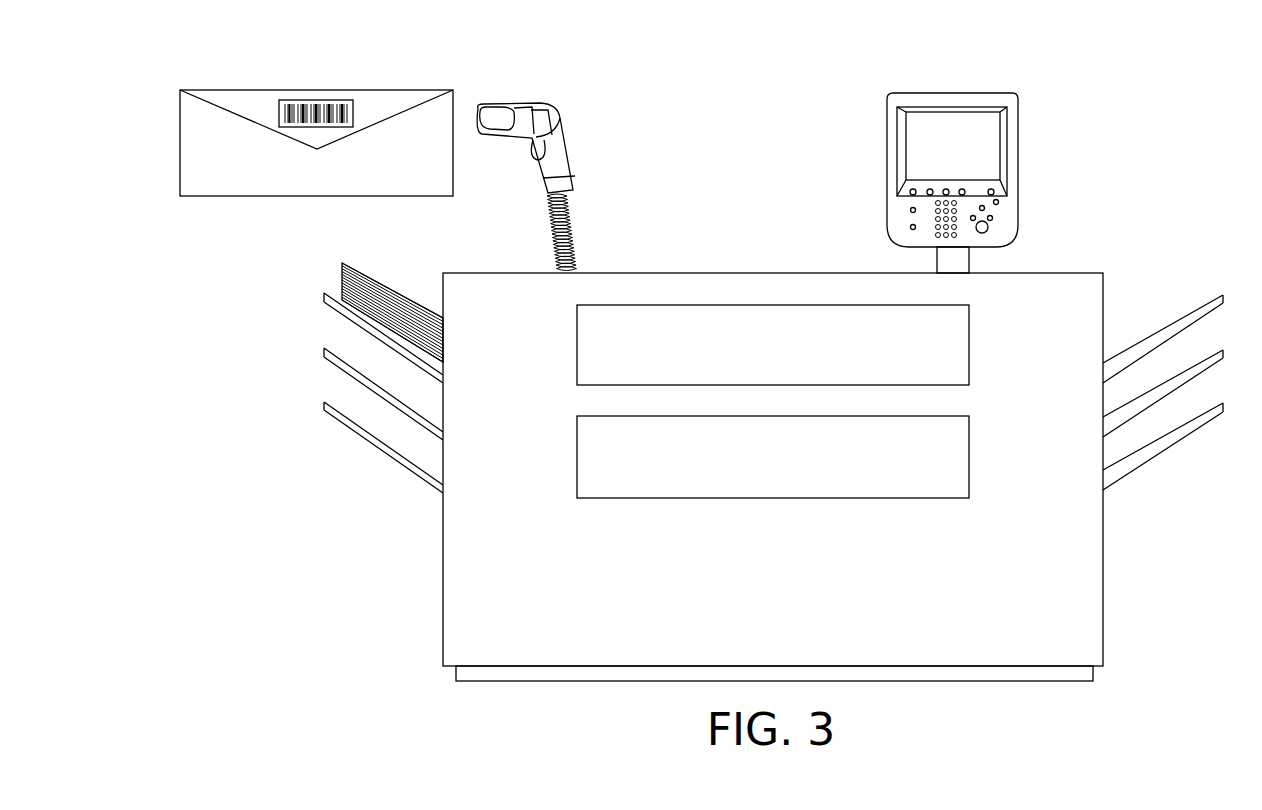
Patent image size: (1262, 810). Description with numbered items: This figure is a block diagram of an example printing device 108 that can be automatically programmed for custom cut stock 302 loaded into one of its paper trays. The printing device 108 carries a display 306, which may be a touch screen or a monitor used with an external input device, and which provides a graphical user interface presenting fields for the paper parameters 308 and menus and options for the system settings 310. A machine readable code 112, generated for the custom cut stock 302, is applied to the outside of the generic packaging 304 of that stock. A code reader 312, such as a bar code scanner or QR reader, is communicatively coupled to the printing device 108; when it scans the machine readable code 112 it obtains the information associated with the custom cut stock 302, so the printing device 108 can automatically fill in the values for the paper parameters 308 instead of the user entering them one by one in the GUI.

The printing device 108 is at (978, 105).
The machine readable code 112 is at (322, 102).
The custom cut stock 302 is at (373, 280).
The generic packaging 304 is at (413, 97).
The display 306 is at (1018, 150).
The paper parameters 308 is at (773, 305).
The system settings 310 is at (773, 498).
The code reader 312 is at (560, 120).